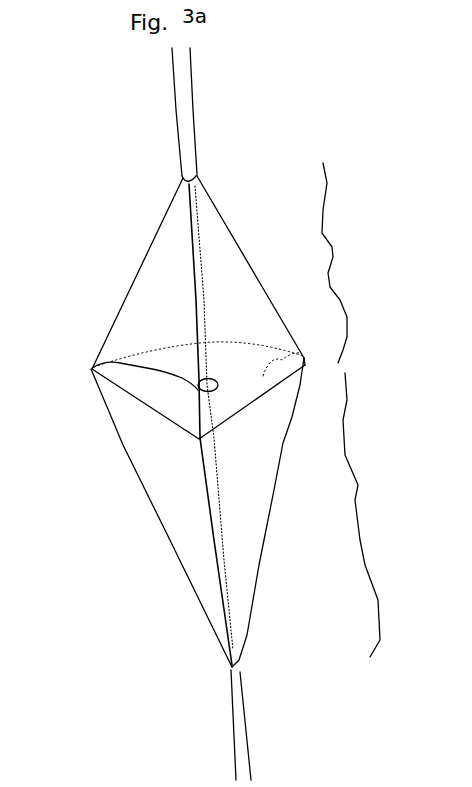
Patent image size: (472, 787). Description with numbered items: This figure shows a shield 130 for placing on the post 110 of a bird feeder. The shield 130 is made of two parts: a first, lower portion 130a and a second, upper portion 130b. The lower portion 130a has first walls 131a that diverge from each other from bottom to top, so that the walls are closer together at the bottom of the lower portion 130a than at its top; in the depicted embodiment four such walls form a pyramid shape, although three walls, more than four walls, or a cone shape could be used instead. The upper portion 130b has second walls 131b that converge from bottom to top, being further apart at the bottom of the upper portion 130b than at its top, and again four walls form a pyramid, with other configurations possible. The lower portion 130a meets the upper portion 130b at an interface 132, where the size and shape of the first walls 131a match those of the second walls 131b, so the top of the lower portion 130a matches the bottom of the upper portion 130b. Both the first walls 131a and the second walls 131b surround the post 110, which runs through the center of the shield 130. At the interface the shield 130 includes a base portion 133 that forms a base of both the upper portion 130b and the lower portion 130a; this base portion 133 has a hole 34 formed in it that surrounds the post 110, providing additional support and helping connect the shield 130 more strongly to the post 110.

The shield 130 is at (290, 106).
The second walls 131b is at (147, 300).
The first walls 131a is at (173, 492).
The interface 132 is at (142, 408).
The side edge 34 is at (92, 368).
The base portion 133 is at (304, 358).
The upper portion 130b is at (361, 263).
The lower portion 130a is at (384, 515).
The post 110 is at (242, 726).